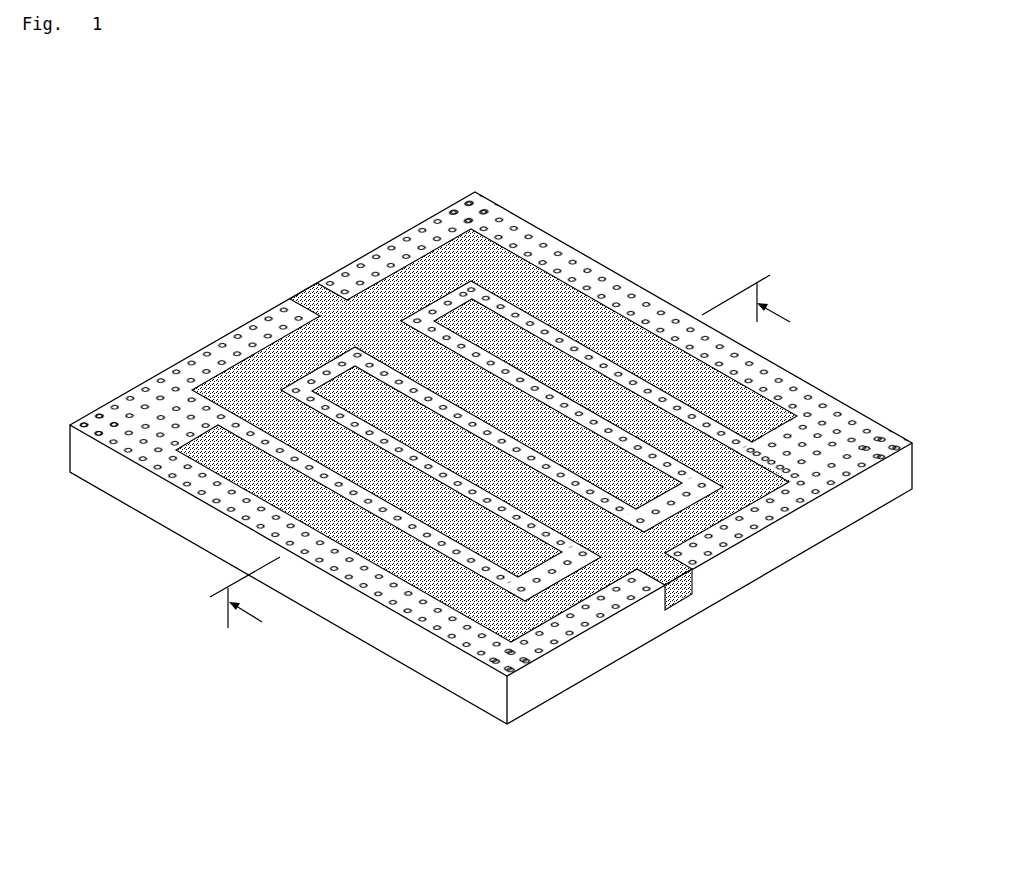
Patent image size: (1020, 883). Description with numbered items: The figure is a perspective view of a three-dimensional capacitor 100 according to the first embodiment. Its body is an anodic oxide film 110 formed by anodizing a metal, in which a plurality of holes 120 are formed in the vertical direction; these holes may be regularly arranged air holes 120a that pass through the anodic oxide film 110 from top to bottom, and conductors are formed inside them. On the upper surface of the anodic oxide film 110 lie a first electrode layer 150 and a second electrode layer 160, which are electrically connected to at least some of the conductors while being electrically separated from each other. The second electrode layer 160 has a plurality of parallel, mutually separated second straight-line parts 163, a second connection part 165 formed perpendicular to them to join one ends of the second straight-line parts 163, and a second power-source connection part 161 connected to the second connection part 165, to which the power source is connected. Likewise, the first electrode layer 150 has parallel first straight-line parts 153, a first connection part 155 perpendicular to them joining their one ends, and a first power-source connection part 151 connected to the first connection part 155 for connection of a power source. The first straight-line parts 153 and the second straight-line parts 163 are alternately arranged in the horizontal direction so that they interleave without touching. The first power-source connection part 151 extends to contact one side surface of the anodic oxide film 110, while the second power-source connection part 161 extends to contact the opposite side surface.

The three-dimensional capacitor 100 is at (475, 414).
The anodic oxide film 110 is at (491, 477).
The holes 120 is at (470, 434).
The air holes 120a is at (491, 434).
The second electrode layer 160 is at (494, 364).
The second power-source connection part 161 is at (282, 252).
The second connection part 165 is at (354, 302).
The second straight-line parts 163 is at (517, 382).
The first electrode layer 150 is at (549, 492).
The first power-source connection part 151 is at (755, 619).
The first straight-line parts 153 is at (525, 462).
The first connection part 155 is at (678, 555).